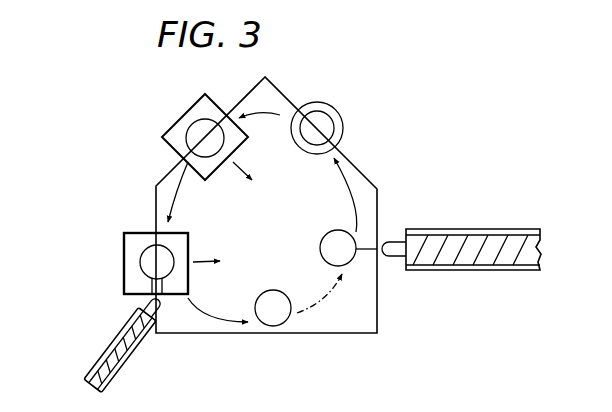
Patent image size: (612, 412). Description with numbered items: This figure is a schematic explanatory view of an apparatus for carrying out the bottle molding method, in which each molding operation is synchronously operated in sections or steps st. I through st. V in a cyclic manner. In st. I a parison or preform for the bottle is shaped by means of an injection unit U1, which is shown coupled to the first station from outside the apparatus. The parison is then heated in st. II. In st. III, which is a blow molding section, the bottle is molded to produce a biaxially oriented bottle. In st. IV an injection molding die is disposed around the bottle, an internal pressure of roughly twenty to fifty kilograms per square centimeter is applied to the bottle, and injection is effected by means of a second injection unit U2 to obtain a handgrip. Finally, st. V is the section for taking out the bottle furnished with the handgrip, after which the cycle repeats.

The parison shaping section I is at (325, 240).
The heating section II is at (318, 103).
The blow molding section III is at (185, 122).
The handgrip injection section IV is at (177, 252).
The take-out section V is at (277, 290).
The injection unit U1 is at (443, 228).
The injection unit U2 is at (103, 343).